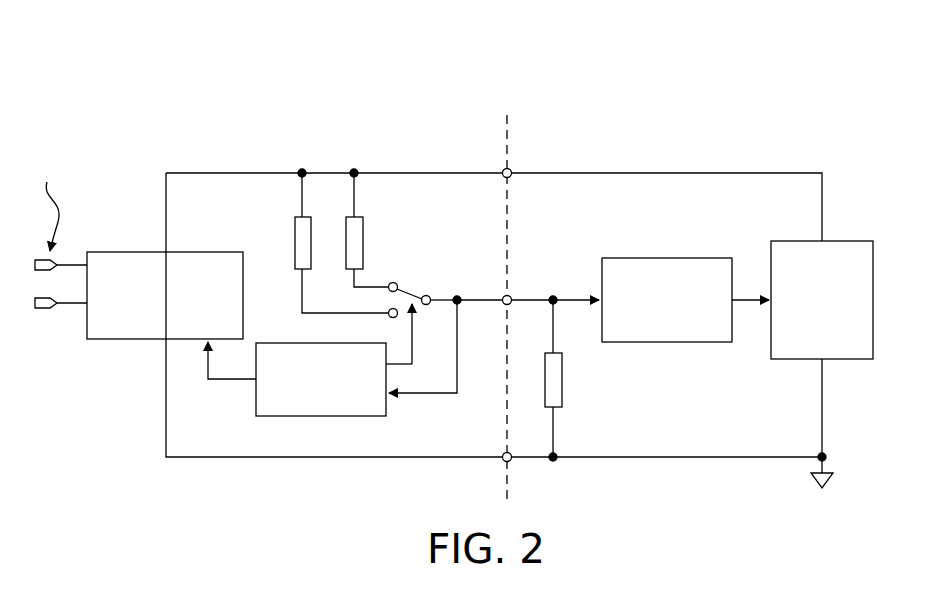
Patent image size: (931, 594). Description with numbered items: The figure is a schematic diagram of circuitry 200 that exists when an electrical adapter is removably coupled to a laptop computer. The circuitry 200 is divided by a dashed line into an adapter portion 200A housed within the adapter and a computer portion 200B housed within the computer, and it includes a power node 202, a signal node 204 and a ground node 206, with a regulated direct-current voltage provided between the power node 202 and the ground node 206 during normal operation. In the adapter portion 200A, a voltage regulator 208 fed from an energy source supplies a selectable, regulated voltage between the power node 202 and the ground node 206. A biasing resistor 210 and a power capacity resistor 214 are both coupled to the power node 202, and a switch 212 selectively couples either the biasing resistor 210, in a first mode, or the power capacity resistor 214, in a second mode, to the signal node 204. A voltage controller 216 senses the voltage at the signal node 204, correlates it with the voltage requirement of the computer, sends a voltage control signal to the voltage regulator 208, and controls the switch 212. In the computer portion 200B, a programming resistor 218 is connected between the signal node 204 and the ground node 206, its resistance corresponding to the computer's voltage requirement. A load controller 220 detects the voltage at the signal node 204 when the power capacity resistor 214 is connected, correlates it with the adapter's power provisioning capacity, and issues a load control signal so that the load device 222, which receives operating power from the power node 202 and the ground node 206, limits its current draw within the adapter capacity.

The circuitry 200 is at (580, 40).
The adapter portion 200A is at (298, 108).
The computer portion 200B is at (678, 98).
The power node 202 is at (509, 177).
The signal node 204 is at (509, 296).
The ground node 206 is at (505, 454).
The voltage regulator 208 is at (147, 252).
The biasing resistor 210 is at (295, 240).
The switch 212 is at (407, 295).
The power capacity resistor 214 is at (365, 243).
The voltage controller 216 is at (308, 417).
The programming resistor 218 is at (563, 380).
The load controller 220 is at (637, 258).
The load device 222 is at (792, 240).